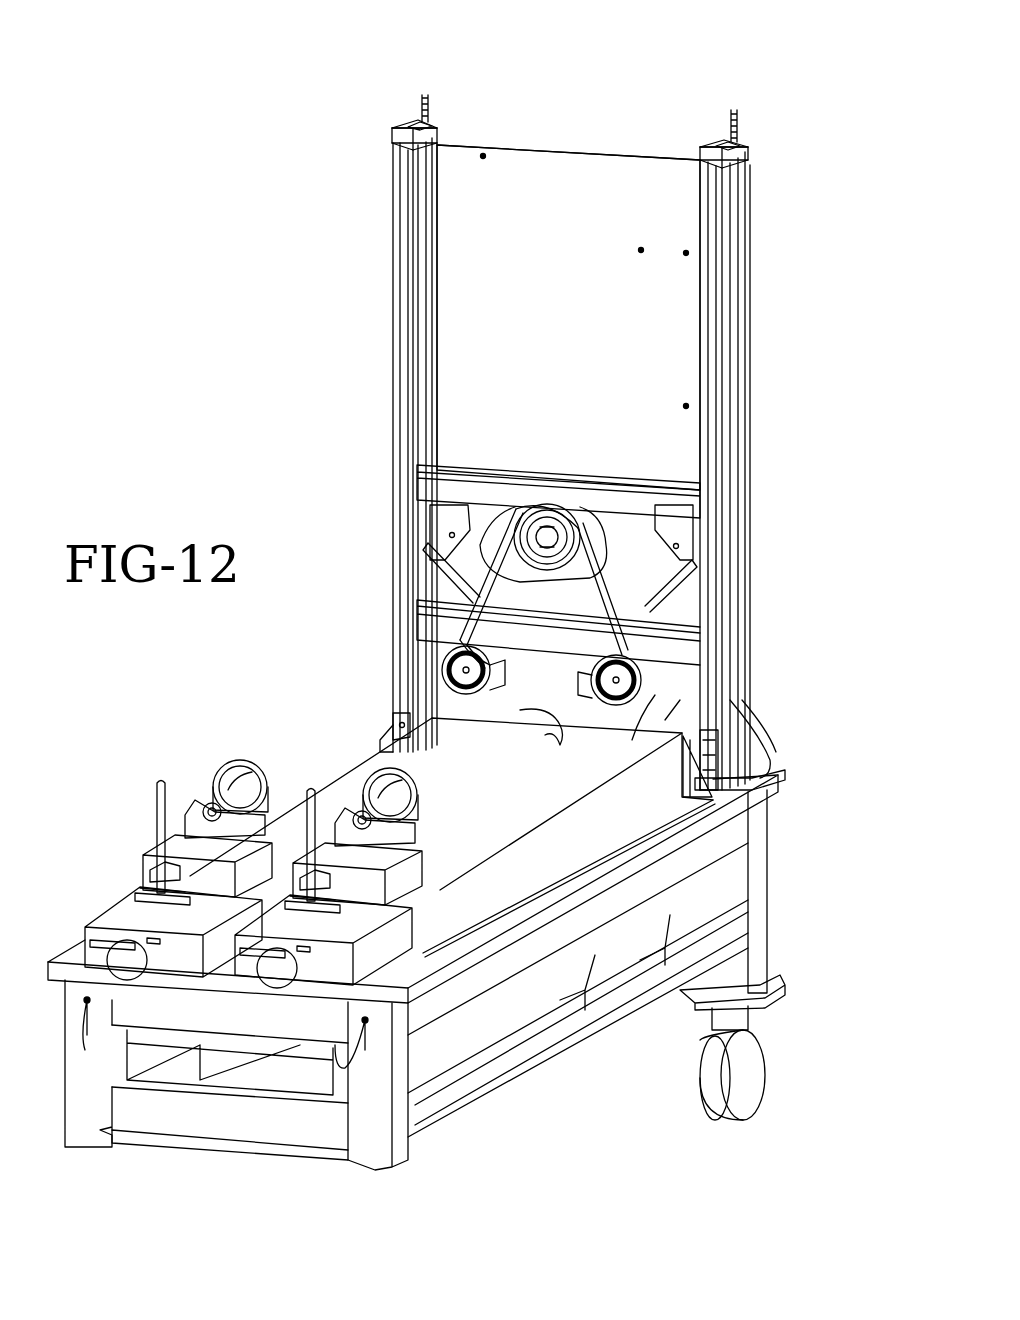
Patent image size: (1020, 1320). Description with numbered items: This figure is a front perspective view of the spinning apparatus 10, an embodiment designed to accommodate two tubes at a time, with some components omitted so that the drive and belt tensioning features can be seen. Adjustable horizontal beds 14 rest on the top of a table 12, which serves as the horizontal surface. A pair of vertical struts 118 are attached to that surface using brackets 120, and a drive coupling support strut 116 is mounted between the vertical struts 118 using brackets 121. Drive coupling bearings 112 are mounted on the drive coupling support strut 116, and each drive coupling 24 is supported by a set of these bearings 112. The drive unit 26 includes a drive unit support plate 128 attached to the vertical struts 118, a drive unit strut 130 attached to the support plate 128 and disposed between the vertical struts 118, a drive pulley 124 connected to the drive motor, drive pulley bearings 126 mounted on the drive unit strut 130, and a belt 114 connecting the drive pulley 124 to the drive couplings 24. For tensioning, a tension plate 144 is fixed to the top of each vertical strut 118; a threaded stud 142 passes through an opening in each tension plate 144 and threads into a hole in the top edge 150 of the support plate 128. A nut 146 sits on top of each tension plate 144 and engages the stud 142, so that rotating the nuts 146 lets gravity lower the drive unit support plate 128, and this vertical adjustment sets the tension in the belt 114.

The spinning apparatus 10 is at (155, 358).
The table 12 is at (740, 932).
The horizontal bed 14 is at (100, 952).
The drive coupling 24 is at (466, 683).
The drive unit 26 is at (825, 110).
The drive coupling bearing 112 is at (660, 695).
The belt 114 is at (545, 705).
The drive coupling support strut 116 is at (690, 655).
The vertical strut 118 is at (392, 440).
The bracket 120 is at (395, 722).
The bracket 121 is at (432, 583).
The drive pulley 124 is at (532, 530).
The drive pulley bearing 126 is at (600, 525).
The drive unit support plate 128 is at (586, 240).
The drive unit strut 130 is at (480, 495).
The threaded stud 142 is at (423, 105).
The tension plate 144 is at (398, 138).
The nut 146 is at (437, 125).
The top edge 150 is at (560, 150).